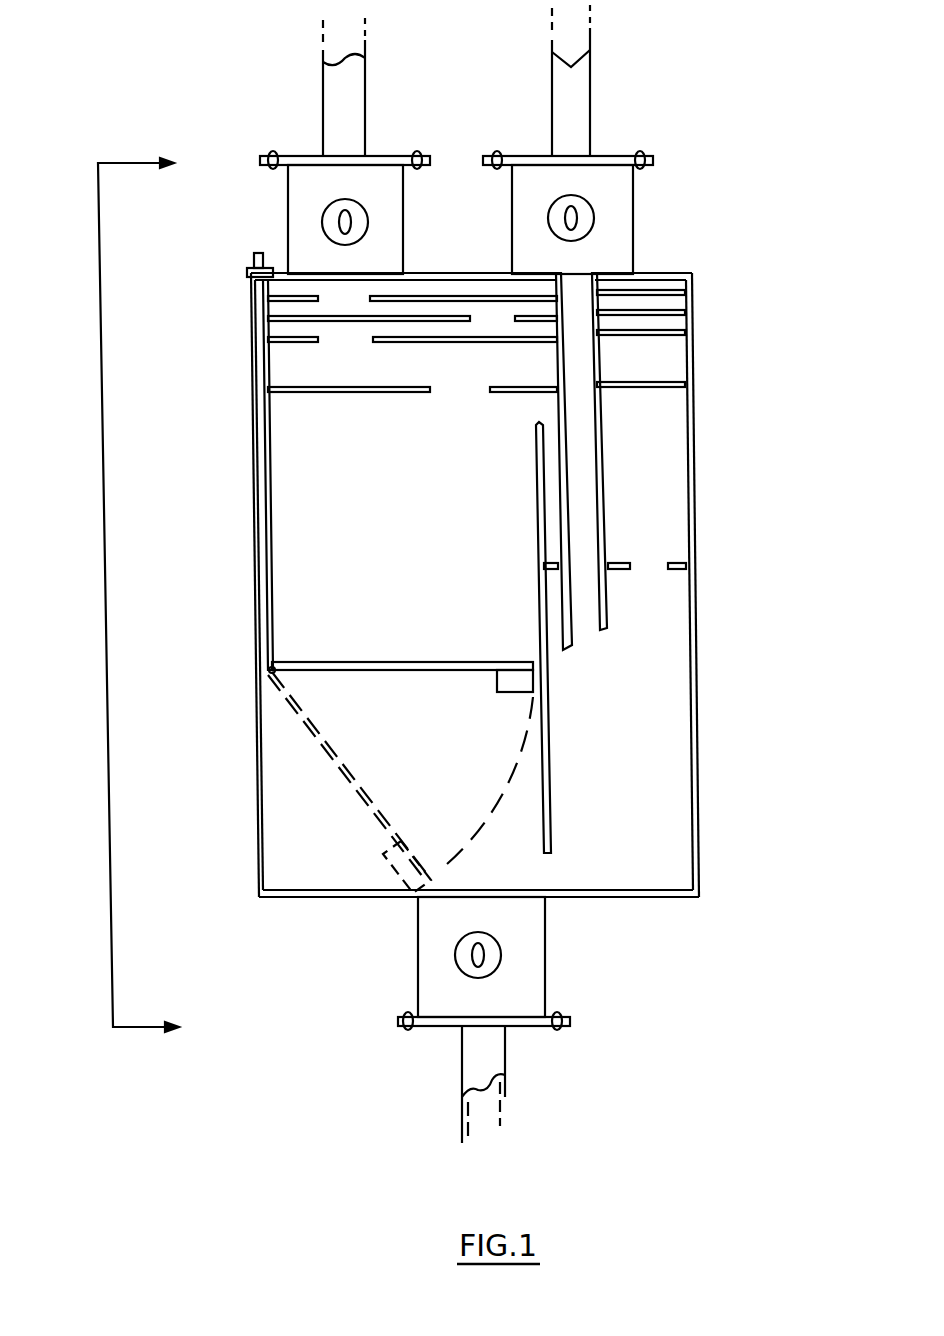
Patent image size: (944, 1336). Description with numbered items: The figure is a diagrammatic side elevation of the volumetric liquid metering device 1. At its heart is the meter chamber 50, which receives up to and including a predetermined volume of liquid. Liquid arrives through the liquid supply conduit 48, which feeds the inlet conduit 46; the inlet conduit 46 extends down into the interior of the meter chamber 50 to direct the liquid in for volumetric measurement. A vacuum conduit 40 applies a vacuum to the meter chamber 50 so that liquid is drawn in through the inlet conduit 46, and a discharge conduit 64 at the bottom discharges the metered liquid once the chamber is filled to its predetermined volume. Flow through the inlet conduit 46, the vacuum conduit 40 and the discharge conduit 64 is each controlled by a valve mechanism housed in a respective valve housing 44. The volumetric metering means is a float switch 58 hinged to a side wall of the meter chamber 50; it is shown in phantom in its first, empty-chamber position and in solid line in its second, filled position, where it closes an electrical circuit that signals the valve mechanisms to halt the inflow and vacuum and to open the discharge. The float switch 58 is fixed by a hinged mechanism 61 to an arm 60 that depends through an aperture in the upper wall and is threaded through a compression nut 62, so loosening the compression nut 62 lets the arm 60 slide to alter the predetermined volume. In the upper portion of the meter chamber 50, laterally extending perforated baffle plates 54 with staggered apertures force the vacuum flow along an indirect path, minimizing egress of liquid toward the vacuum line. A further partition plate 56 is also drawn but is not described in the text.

The volumetric liquid metering device 1 is at (104, 533).
The vacuum conduit 40 is at (365, 97).
The valve housing 44 is at (288, 228).
The inlet conduit 46 is at (607, 500).
The liquid supply conduit 48 is at (590, 97).
The meter chamber 50 is at (424, 544).
The baffle plates 54 is at (692, 562).
The partition plate 56 is at (537, 530).
The float switch 58 is at (430, 662).
The arm 60 is at (273, 498).
The hinged mechanism 61 is at (274, 664).
The compression nut 62 is at (246, 273).
The discharge conduit 64 is at (503, 1055).